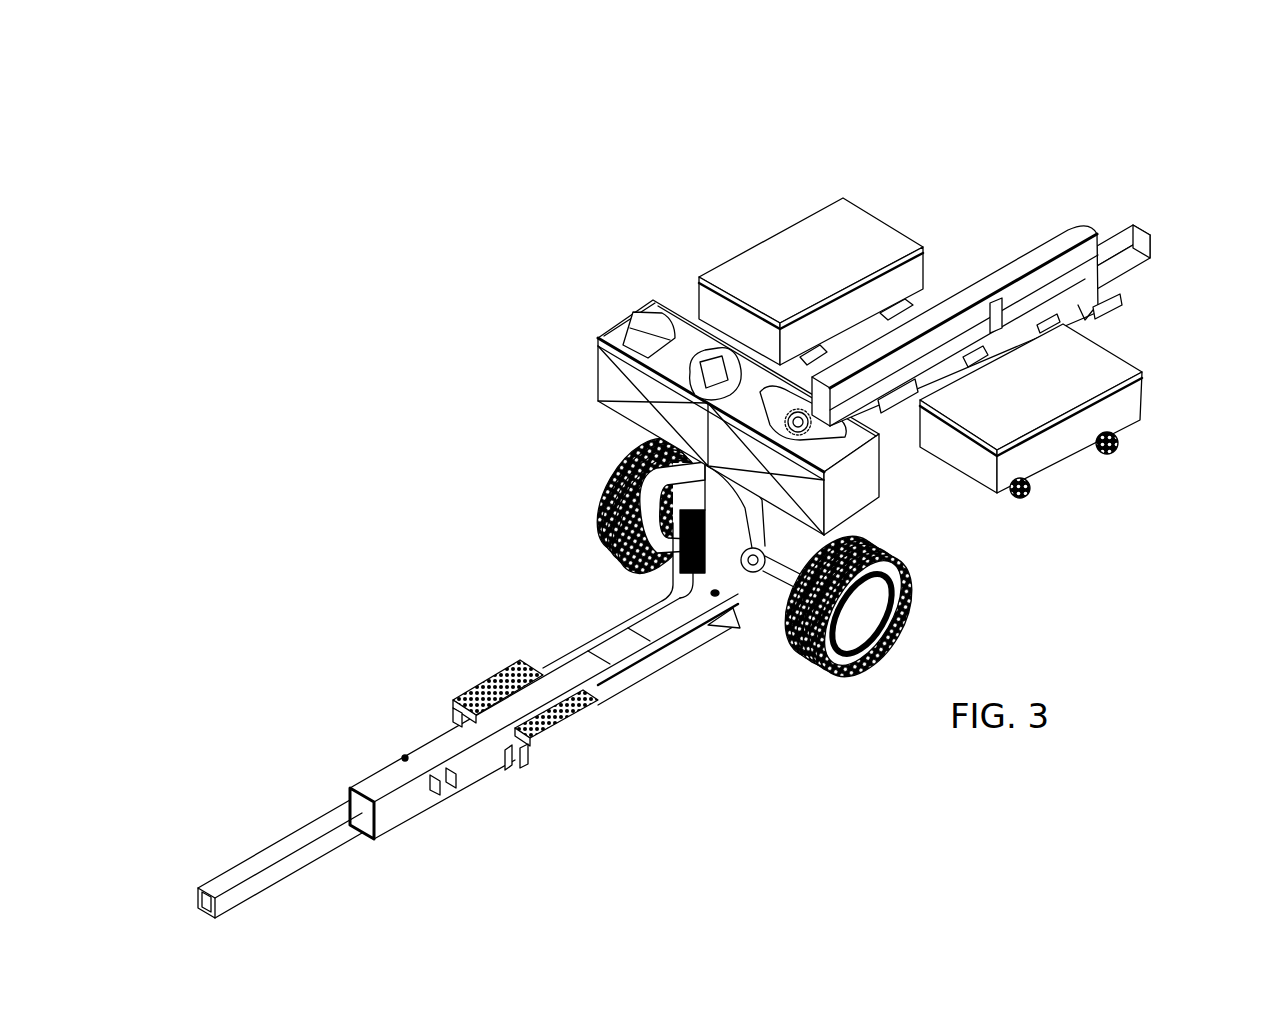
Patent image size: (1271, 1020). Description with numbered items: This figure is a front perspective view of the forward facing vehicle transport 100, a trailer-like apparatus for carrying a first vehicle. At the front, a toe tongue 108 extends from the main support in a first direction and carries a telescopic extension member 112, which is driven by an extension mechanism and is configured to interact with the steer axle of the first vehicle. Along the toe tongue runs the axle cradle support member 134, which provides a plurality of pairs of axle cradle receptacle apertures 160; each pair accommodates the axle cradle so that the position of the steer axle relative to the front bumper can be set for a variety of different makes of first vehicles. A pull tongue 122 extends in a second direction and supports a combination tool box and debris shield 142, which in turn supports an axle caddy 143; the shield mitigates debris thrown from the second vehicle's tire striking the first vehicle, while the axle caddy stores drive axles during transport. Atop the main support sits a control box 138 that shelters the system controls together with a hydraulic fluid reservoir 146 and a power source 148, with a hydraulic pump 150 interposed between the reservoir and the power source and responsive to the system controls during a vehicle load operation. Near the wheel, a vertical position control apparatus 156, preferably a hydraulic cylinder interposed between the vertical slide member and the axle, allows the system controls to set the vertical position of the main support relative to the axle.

The forward facing vehicle transport 100 is at (921, 110).
The toe tongue 108 is at (398, 855).
The telescopic extension member 112 is at (400, 775).
The pull tongue 122 is at (1111, 208).
The axle cradle support member 134 is at (514, 648).
The control box 138 is at (653, 300).
The combination tool box and debris shield 142 is at (822, 212).
The axle caddy 143 is at (1045, 485).
The hydraulic fluid reservoir 146 is at (879, 436).
The power source 148 is at (627, 329).
The hydraulic pump 150 is at (690, 368).
The vertical position control apparatus 156 is at (753, 558).
The axle cradle receptacle apertures 160 is at (492, 678).